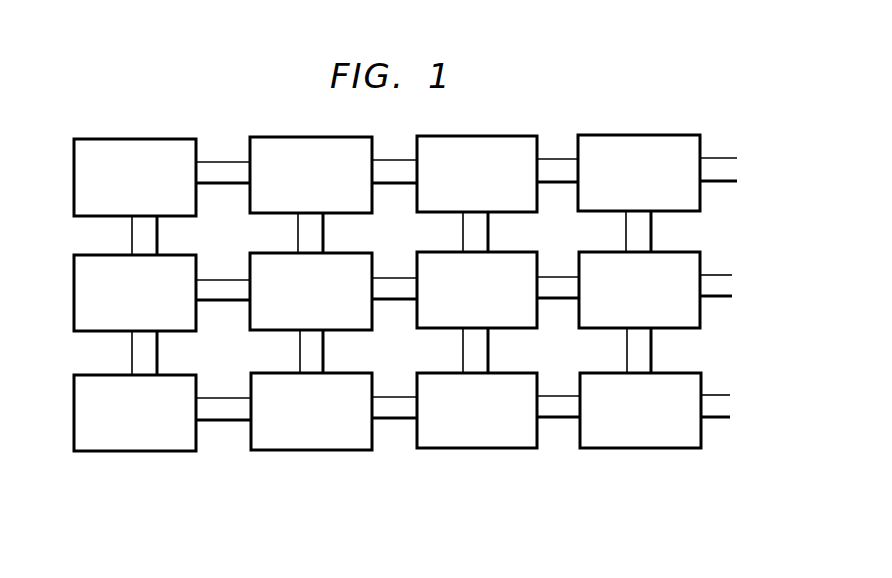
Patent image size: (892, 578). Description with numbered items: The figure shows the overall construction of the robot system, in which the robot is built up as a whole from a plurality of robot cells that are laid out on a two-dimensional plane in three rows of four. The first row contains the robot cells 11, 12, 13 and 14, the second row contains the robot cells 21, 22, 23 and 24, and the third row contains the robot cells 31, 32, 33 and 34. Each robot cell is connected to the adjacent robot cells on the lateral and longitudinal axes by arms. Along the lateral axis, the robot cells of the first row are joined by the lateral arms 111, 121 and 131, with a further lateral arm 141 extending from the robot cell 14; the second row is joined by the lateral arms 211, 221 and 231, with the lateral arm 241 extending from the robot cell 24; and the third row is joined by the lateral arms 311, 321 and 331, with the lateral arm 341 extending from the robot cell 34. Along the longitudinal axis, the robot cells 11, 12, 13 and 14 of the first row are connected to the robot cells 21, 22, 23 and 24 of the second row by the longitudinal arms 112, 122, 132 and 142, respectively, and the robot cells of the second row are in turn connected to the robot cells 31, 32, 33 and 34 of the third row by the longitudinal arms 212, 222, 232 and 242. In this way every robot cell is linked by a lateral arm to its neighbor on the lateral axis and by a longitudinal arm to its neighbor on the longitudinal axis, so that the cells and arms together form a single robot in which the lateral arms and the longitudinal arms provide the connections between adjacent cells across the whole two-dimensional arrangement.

The robot cell 11 is at (135, 177).
The robot cell 12 is at (311, 175).
The robot cell 13 is at (477, 174).
The robot cell 14 is at (639, 173).
The robot cell 21 is at (135, 293).
The robot cell 22 is at (311, 291).
The robot cell 23 is at (477, 290).
The robot cell 24 is at (639, 290).
The robot cell 31 is at (135, 413).
The robot cell 32 is at (311, 411).
The robot cell 33 is at (477, 410).
The robot cell 34 is at (640, 410).
The lateral arm 111 is at (215, 172).
The lateral arm 121 is at (391, 170).
The lateral arm 131 is at (557, 170).
The lateral arm 141 is at (712, 173).
The lateral arm 211 is at (218, 300).
The lateral arm 221 is at (390, 300).
The lateral arm 231 is at (555, 300).
The lateral arm 241 is at (720, 290).
The lateral arm 311 is at (216, 423).
The lateral arm 321 is at (390, 422).
The lateral arm 331 is at (557, 420).
The lateral arm 341 is at (718, 410).
The longitudinal arm 112 is at (153, 233).
The longitudinal arm 122 is at (323, 236).
The longitudinal arm 132 is at (488, 236).
The longitudinal arm 142 is at (648, 233).
The longitudinal arm 212 is at (157, 353).
The longitudinal arm 222 is at (323, 353).
The longitudinal arm 232 is at (488, 353).
The longitudinal arm 242 is at (647, 353).